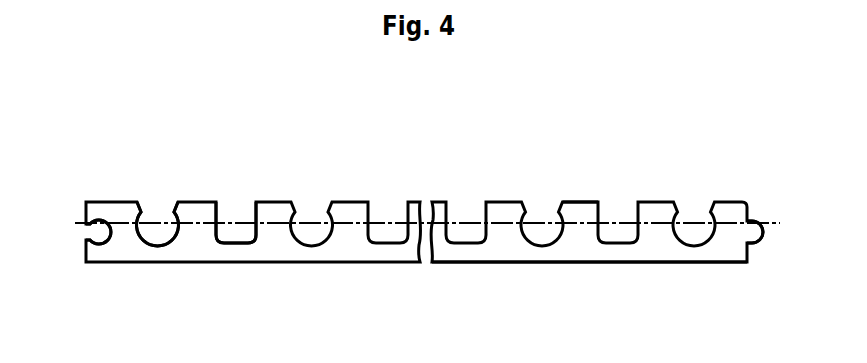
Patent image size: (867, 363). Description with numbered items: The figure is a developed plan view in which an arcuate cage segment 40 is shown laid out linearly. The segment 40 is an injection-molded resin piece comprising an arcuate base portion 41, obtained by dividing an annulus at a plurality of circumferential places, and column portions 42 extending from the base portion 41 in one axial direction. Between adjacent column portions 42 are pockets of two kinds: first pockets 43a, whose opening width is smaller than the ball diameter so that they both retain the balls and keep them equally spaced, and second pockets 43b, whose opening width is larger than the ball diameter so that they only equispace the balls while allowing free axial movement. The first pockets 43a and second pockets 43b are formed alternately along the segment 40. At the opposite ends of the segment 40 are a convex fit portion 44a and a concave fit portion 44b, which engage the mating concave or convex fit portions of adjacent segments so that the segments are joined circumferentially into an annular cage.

The segment 40 is at (656, 190).
The base portion 41 is at (543, 258).
The column portion 42 is at (577, 200).
The first pocket 43a is at (153, 208).
The second pocket 43b is at (232, 208).
The convex fit portion 44a is at (766, 220).
The concave fit portion 44b is at (94, 231).